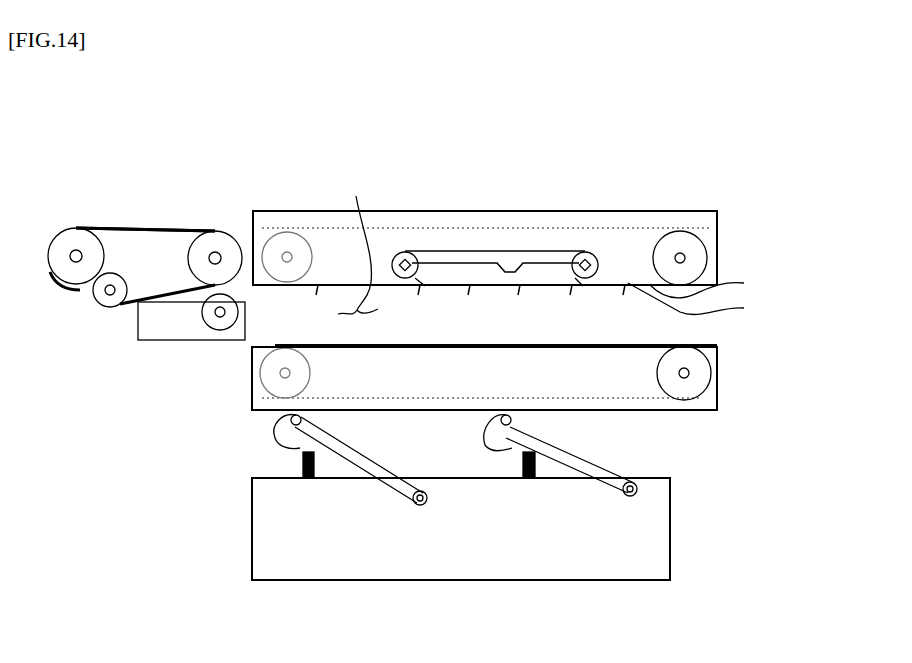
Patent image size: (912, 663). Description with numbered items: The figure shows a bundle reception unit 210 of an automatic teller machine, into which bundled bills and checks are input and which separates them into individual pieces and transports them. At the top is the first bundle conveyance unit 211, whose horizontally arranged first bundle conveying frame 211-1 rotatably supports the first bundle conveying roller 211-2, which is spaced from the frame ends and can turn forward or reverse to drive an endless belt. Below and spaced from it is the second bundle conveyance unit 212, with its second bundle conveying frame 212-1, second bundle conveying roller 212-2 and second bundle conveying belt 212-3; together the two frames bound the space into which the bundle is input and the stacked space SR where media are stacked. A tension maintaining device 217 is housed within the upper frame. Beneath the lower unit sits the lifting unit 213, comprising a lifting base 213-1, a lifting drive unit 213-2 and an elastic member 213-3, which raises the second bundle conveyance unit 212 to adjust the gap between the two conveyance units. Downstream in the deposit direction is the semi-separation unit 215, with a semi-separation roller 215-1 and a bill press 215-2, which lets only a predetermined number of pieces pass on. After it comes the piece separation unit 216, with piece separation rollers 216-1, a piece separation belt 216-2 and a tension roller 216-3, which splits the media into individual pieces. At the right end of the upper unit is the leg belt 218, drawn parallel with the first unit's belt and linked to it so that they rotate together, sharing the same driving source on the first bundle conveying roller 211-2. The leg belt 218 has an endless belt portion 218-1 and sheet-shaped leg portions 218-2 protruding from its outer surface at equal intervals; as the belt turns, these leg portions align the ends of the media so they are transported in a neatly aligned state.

The bundle reception unit 210 is at (468, 112).
The first bundle conveyance unit 211 is at (624, 183).
The first bundle conveying frame 211-1 is at (690, 212).
The first bundle conveying roller 211-2 is at (712, 243).
The stacked space SR is at (358, 244).
The tension maintaining device 217 is at (510, 247).
The piece separation unit 216 is at (88, 228).
The piece separation rollers 216-1 is at (224, 250).
The piece separation belt 216-2 is at (157, 230).
The tension roller 216-3 is at (96, 300).
The semi-separation unit 215 is at (248, 388).
The semi-separation roller 215-1 is at (215, 330).
The bill press 215-2 is at (145, 342).
The leg belt 218 is at (808, 272).
The belt portion 218-1 is at (712, 300).
The leg portion 218-2 is at (723, 285).
The second bundle conveyance unit 212 is at (692, 411).
The second bundle conveying frame 212-1 is at (718, 378).
The second bundle conveying roller 212-2 is at (718, 355).
The second bundle conveying belt 212-3 is at (660, 348).
The lifting unit 213 is at (593, 582).
The lifting base 213-1 is at (252, 535).
The lifting drive unit 213-2 is at (285, 426).
The elastic member 213-3 is at (302, 465).